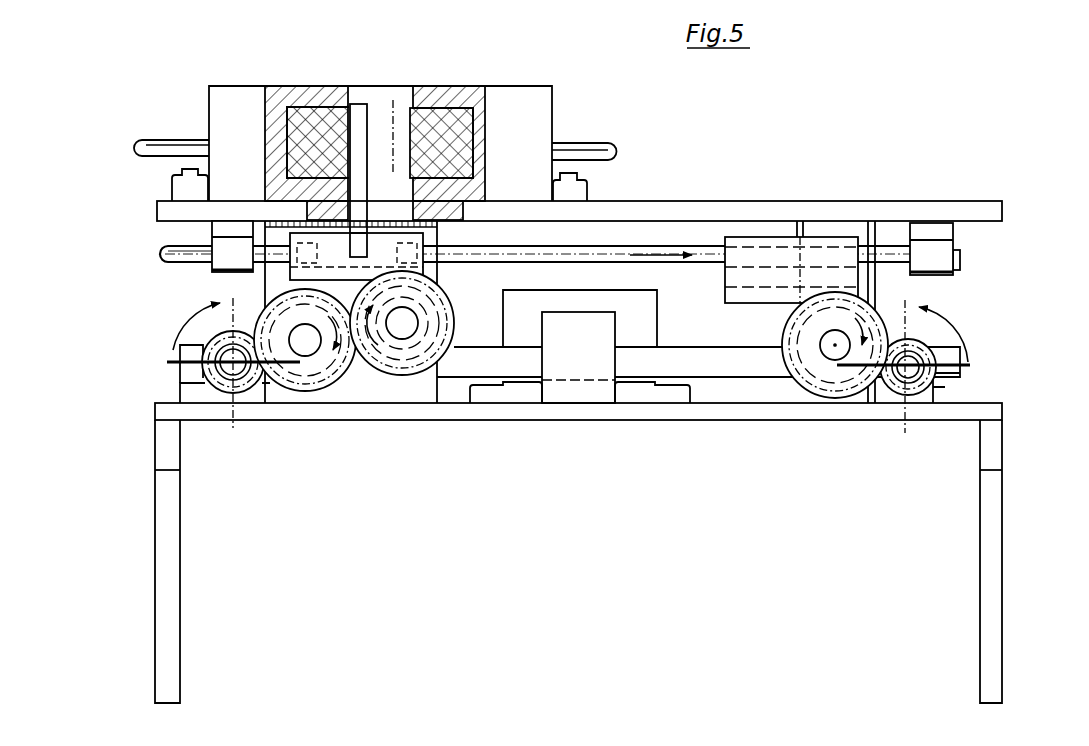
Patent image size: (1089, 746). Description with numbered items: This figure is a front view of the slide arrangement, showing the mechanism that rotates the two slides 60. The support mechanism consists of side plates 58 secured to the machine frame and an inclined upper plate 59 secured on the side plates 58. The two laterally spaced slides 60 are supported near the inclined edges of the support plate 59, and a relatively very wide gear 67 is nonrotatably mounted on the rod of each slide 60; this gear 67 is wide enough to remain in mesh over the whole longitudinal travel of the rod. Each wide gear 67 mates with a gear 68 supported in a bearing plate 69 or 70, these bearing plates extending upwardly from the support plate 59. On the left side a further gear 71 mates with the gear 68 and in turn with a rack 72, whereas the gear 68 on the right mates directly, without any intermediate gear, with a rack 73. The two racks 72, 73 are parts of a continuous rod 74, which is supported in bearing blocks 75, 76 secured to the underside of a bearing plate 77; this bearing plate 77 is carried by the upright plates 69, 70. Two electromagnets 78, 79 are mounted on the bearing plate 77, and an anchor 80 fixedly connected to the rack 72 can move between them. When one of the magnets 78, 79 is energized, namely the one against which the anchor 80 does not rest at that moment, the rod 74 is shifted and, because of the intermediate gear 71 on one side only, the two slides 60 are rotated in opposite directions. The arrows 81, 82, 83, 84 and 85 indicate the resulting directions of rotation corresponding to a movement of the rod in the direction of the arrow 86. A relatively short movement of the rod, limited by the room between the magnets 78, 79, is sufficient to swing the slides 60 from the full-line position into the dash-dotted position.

The side plates 58 is at (165, 553).
The upper plate 59 is at (513, 412).
The slides 60 is at (173, 362).
The wide gear 67 is at (242, 382).
The gears 68 is at (307, 385).
The bearing plate 69 is at (415, 390).
The bearing plate 70 is at (858, 400).
The further gear 71 is at (415, 352).
The rack 72 is at (378, 247).
The rack 73 is at (782, 260).
The continuous rod 74 is at (180, 253).
The bearing block 75 is at (223, 243).
The bearing block 76 is at (938, 248).
The bearing plate 77 is at (740, 210).
The electromagnet 78 is at (314, 115).
The electromagnet 79 is at (447, 115).
The anchor 80 is at (360, 112).
The arrow of direction of rotation 81 is at (380, 348).
The arrow of direction of rotation 82 is at (332, 355).
The arrow of direction of rotation 83 is at (193, 315).
The arrow of direction of rotation 84 is at (853, 322).
The arrow of direction of rotation 85 is at (950, 320).
The arrow of rod movement 86 is at (660, 253).